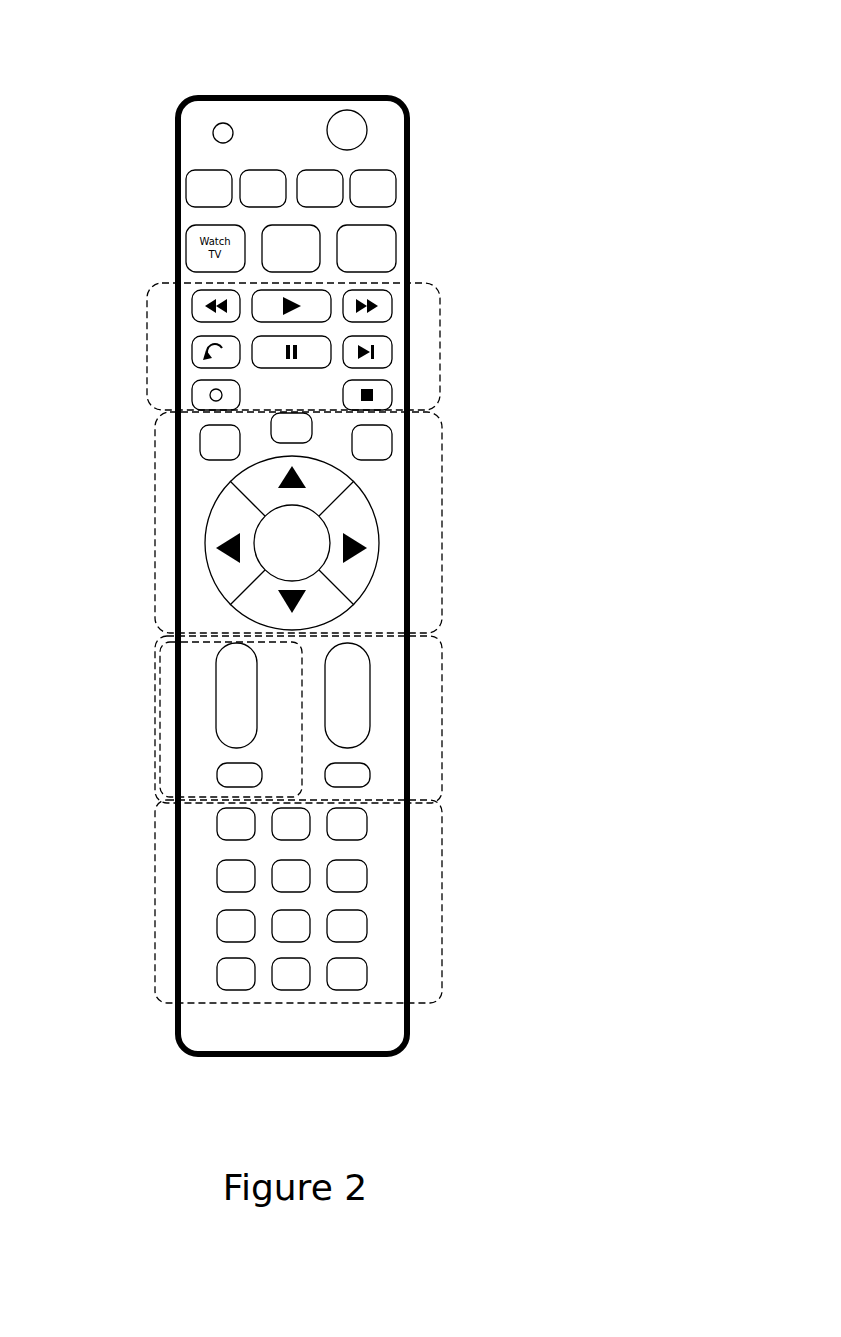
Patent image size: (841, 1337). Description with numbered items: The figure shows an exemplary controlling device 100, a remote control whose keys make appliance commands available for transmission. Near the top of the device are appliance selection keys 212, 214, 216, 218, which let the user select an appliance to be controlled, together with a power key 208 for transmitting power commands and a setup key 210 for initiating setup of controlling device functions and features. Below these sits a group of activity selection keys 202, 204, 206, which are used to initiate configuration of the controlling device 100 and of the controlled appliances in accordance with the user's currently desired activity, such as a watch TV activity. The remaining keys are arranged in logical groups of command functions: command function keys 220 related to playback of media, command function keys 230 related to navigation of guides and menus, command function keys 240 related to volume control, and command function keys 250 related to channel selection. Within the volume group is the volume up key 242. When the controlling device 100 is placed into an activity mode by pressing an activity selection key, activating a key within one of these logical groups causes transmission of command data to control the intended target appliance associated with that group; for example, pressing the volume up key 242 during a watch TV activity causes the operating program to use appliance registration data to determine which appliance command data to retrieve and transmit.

The controlling device 100 is at (313, 1106).
The activity selection key 202 is at (175, 255).
The activity selection key 204 is at (291, 224).
The activity selection key 206 is at (378, 223).
The power key 208 is at (347, 109).
The setup key 210 is at (216, 127).
The appliance selection key 212 is at (203, 169).
The appliance selection key 214 is at (263, 169).
The appliance selection key 216 is at (317, 168).
The appliance selection key 218 is at (372, 168).
The command function keys 220 is at (440, 339).
The command function keys 230 is at (442, 536).
The command function keys 240 is at (247, 719).
The Volume up key 242 is at (232, 660).
The command function keys 250 is at (442, 812).